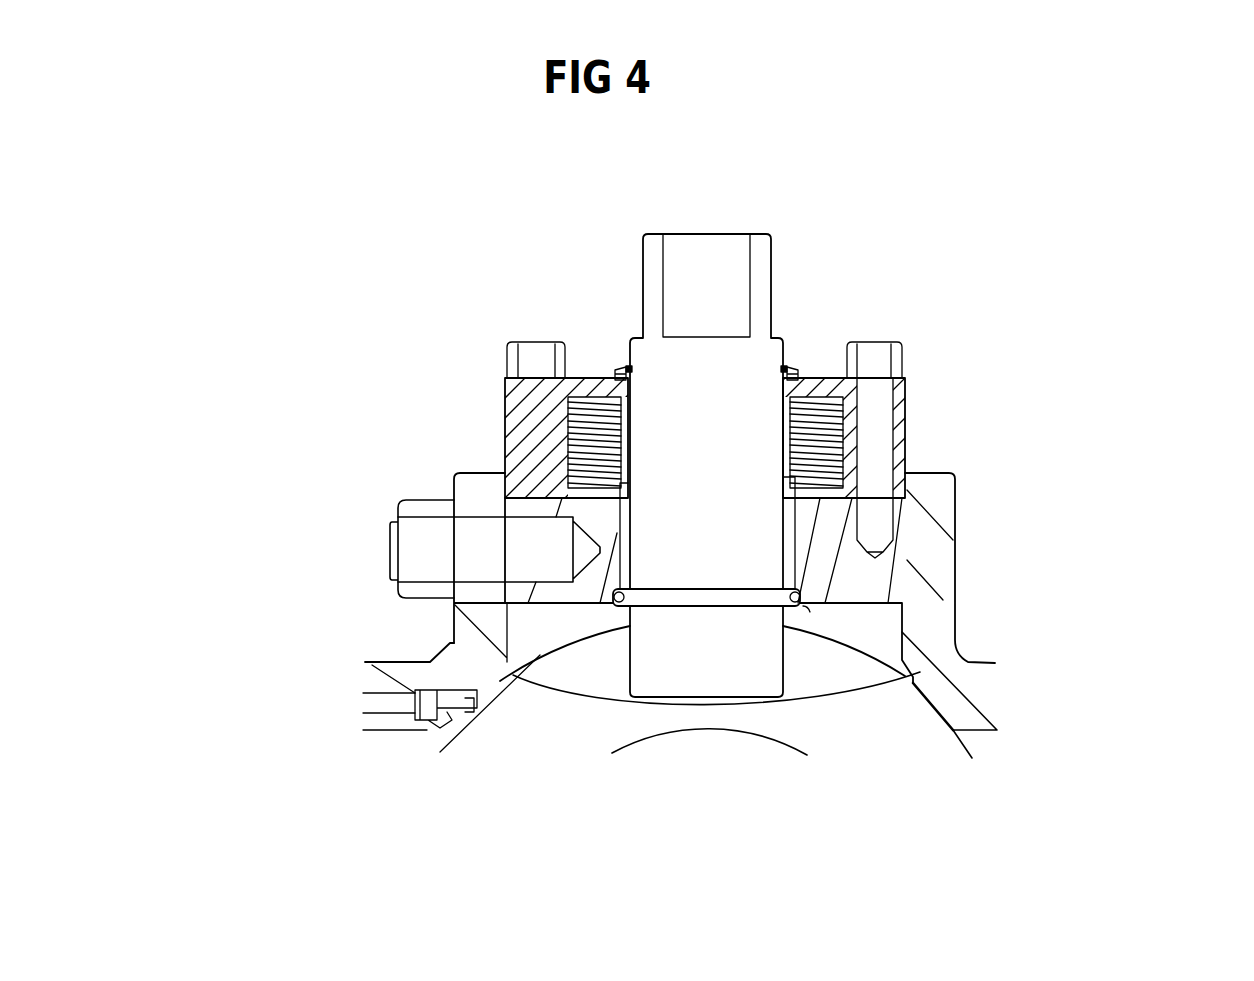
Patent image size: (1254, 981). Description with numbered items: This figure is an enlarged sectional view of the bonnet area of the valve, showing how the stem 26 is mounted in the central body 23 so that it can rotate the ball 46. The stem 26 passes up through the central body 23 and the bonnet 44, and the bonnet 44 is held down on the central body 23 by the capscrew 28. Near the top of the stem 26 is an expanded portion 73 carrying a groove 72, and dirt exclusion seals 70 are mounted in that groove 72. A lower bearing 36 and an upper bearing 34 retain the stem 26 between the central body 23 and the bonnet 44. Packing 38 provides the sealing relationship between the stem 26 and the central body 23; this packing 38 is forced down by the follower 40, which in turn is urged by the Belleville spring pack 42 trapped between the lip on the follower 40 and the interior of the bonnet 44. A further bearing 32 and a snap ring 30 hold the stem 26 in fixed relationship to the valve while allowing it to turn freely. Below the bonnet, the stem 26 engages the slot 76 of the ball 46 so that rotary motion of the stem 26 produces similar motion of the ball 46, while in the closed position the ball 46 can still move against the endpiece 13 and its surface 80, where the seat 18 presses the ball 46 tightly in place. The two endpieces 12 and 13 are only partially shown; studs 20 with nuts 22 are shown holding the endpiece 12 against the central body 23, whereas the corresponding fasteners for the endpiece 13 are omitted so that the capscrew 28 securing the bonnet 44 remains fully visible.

The endpiece 12 is at (390, 672).
The endpiece 13 is at (955, 635).
The seat 18 is at (440, 752).
The stud 20 is at (537, 558).
The nut 22 is at (420, 568).
The central body 23 is at (532, 508).
The stem 26 is at (728, 234).
The capscrew 28 is at (903, 358).
The snap ring 30 is at (794, 370).
The bearing 32 is at (799, 377).
The upper bearing 34 is at (623, 370).
The lower bearing 36 is at (800, 582).
The packing 38 is at (797, 535).
The follower 40 is at (855, 500).
The Belleville spring pack 42 is at (847, 428).
The bonnet 44 is at (503, 403).
The ball 46 is at (973, 760).
The dirt exclusion seal 70 is at (810, 613).
The groove 72 is at (630, 607).
The expanded portion 73 is at (730, 607).
The slot 76 is at (587, 697).
The surface 80 is at (947, 715).